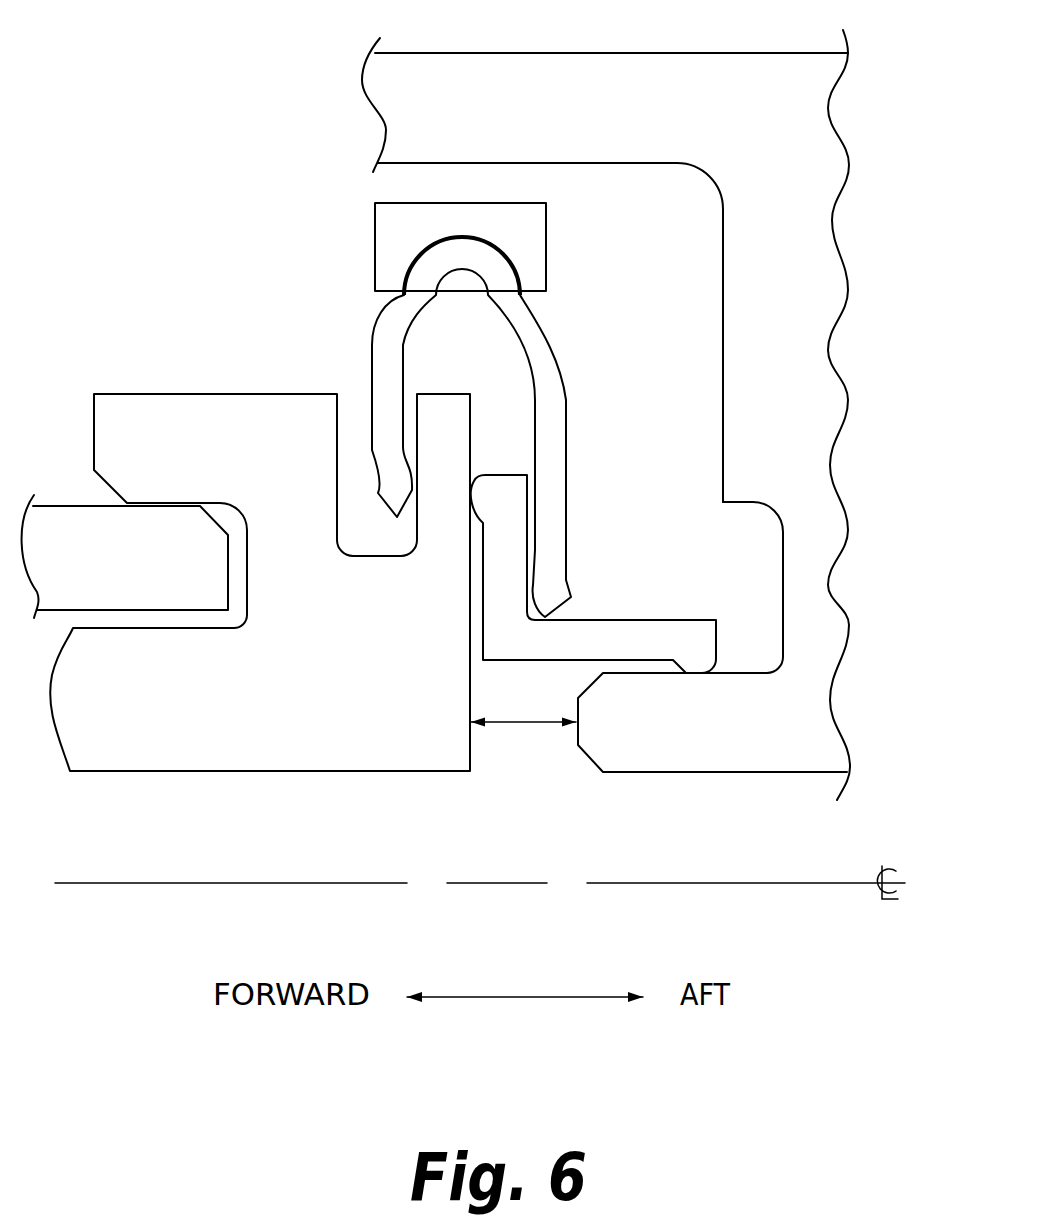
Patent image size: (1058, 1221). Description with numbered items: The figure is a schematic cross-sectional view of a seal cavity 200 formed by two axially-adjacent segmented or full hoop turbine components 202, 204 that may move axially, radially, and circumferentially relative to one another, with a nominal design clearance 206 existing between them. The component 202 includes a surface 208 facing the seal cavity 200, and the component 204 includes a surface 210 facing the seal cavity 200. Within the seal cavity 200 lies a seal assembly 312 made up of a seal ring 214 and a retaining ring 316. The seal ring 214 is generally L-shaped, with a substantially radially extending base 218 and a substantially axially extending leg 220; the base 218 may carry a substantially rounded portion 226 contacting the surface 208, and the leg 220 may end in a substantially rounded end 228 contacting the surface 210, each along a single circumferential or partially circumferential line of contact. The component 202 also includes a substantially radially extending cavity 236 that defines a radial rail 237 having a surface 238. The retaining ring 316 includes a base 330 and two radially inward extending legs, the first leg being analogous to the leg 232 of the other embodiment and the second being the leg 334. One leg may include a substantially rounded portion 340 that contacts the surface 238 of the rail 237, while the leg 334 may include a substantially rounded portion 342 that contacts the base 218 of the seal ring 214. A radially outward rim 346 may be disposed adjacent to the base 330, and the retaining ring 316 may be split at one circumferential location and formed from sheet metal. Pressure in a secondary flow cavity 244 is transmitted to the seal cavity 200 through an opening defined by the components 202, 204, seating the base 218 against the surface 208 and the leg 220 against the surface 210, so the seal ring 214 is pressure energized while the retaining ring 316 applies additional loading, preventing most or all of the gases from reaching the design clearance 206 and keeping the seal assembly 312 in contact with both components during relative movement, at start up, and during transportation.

The seal cavity 200 is at (166, 124).
The turbine component 202 is at (192, 772).
The turbine component 204 is at (760, 773).
The nominal design clearance 206 is at (523, 723).
The surface 208 is at (470, 757).
The surface 210 is at (757, 672).
The seal ring 214 is at (618, 606).
The base 218 is at (481, 613).
The leg 220 is at (665, 620).
The substantially rounded portion 226 is at (472, 490).
The substantially rounded end 228 is at (693, 675).
The leg 232 is at (372, 368).
The substantially radially extending cavity 236 is at (355, 408).
The radial rail 237 is at (430, 393).
The surface 238 is at (417, 522).
The secondary flow cavity 244 is at (272, 34).
The seal assembly 312 is at (668, 445).
The retaining ring 316 is at (350, 280).
The base 330 is at (462, 272).
The leg 334 is at (567, 398).
The substantially rounded portion 340 is at (417, 481).
The substantially rounded portion 342 is at (532, 568).
The radially outward rim 346 is at (375, 240).